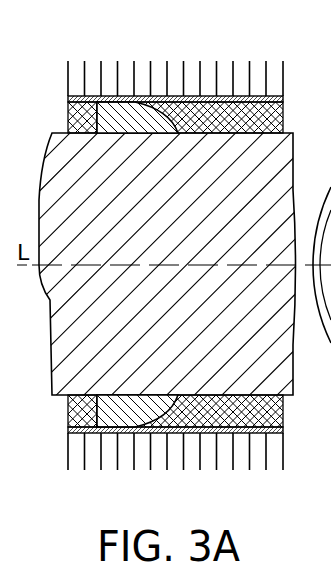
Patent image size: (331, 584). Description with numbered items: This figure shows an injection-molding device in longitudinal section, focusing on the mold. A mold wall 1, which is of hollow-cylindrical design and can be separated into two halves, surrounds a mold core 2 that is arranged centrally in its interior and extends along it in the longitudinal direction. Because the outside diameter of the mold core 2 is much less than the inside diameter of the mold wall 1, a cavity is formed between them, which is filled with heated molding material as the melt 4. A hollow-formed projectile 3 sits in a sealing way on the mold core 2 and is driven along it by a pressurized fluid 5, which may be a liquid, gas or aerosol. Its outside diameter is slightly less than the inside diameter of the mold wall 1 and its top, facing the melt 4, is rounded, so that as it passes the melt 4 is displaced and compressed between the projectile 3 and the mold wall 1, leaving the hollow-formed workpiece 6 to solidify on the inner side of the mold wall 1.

The mold wall 1 is at (220, 64).
The mold core 2 is at (62, 330).
The hollow-formed projectile 3 is at (124, 118).
The melt 4 is at (281, 110).
The pressurized fluid 5 is at (70, 126).
The hollow-formed workpiece 6 is at (71, 100).